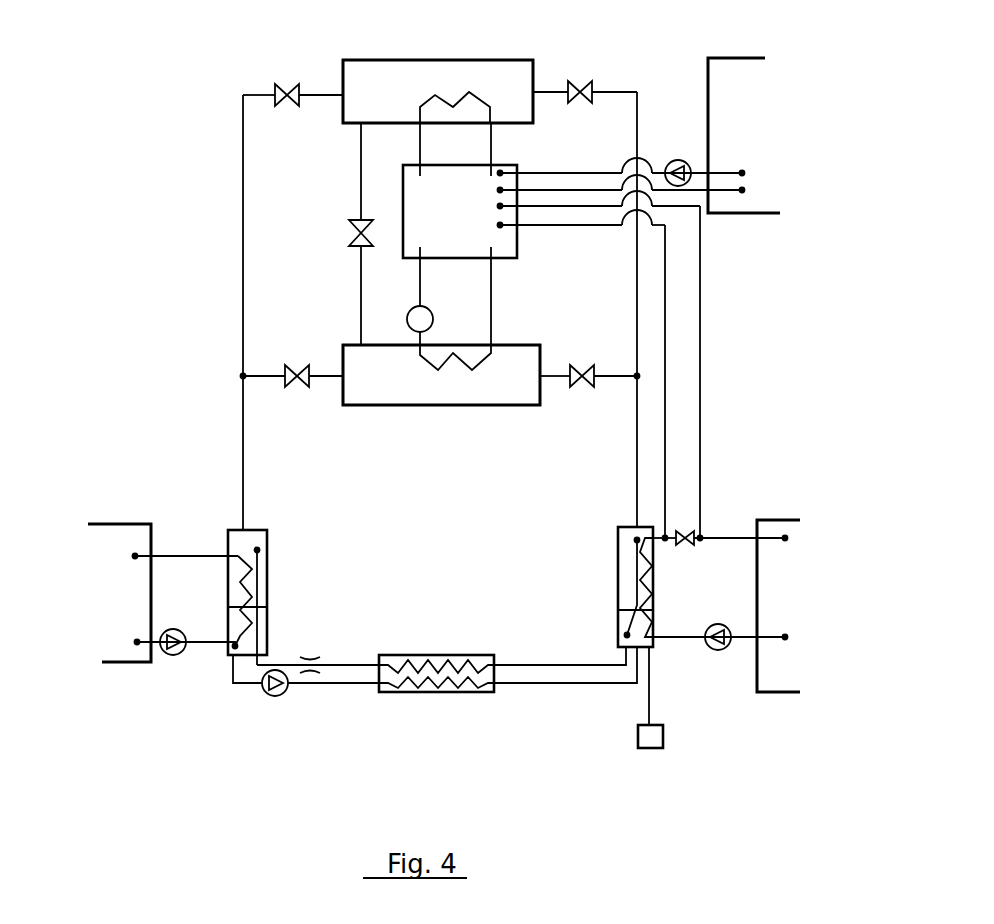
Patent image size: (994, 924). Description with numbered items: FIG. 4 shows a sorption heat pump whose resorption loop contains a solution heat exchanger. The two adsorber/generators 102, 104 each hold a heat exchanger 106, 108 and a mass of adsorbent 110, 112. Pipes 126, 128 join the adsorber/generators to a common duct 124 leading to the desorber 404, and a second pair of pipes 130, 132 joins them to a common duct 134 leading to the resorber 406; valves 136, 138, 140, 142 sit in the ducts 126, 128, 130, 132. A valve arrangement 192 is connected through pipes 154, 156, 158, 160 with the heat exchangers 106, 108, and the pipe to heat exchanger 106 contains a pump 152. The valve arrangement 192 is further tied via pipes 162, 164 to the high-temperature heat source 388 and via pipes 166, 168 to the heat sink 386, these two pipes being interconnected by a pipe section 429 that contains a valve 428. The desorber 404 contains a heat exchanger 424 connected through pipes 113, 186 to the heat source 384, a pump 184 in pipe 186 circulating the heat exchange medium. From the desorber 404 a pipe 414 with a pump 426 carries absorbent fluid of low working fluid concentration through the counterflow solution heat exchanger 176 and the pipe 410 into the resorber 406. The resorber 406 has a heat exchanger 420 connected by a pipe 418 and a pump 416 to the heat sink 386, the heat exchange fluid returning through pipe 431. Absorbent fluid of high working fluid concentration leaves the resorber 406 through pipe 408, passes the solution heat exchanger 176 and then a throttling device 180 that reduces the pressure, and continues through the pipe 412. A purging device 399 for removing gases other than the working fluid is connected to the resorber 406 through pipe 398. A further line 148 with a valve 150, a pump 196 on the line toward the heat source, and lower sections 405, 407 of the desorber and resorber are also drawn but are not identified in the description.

The adsorber/generator 102 is at (458, 405).
The adsorber/generator 104 is at (472, 60).
The heat exchanger 106 is at (437, 370).
The heat exchanger 108 is at (435, 93).
The mass of adsorbent 110 is at (507, 388).
The mass of adsorbent 112 is at (508, 68).
The pipe 113 is at (202, 553).
The common duct 124 is at (242, 418).
The pipe 126 is at (266, 381).
The pipe 128 is at (312, 92).
The pipe 130 is at (550, 365).
The pipe 132 is at (553, 91).
The common duct 134 is at (637, 510).
The valve 136 is at (306, 365).
The valve 138 is at (277, 83).
The valve 140 is at (590, 368).
The valve 142 is at (592, 80).
The conduit 148 is at (359, 275).
The valve 150 is at (350, 221).
The pump 152 is at (412, 308).
The pipe 154 is at (421, 289).
The pipe 156 is at (421, 160).
The pipe 158 is at (484, 160).
The pipe 160 is at (487, 289).
The pipe 162 is at (530, 172).
The pipe 164 is at (540, 188).
The pipe 166 is at (665, 330).
The pipe 168 is at (700, 335).
The solution heat exchanger 176 is at (445, 693).
The throttling device 180 is at (322, 655).
The pump 184 is at (177, 655).
The pipe 186 is at (205, 638).
The valve arrangement 192 is at (460, 211).
The pump 196 is at (683, 163).
The heat source 384 is at (119, 593).
The heat sink 386 is at (778, 606).
The high temperature heat source 388 is at (744, 135).
The pipe 398 is at (652, 707).
The purging device 399 is at (665, 735).
The desorber 404 is at (268, 587).
The lower section of heat exchanger 404 405 is at (250, 640).
The resorber 406 is at (617, 577).
The lower section of heat exchanger 406 407 is at (625, 618).
The pipe 408 is at (570, 663).
The pipe 410 is at (567, 685).
The pipe 412 is at (343, 665).
The pipe 414 is at (358, 685).
The pump 416 is at (713, 626).
The pipe 418 is at (675, 635).
The heat exchanger 420 is at (652, 600).
The heat exchanger 424 is at (258, 570).
The pump 426 is at (268, 695).
The valve 428 is at (697, 525).
The pipe section 429 is at (668, 541).
The pipe 431 is at (708, 536).